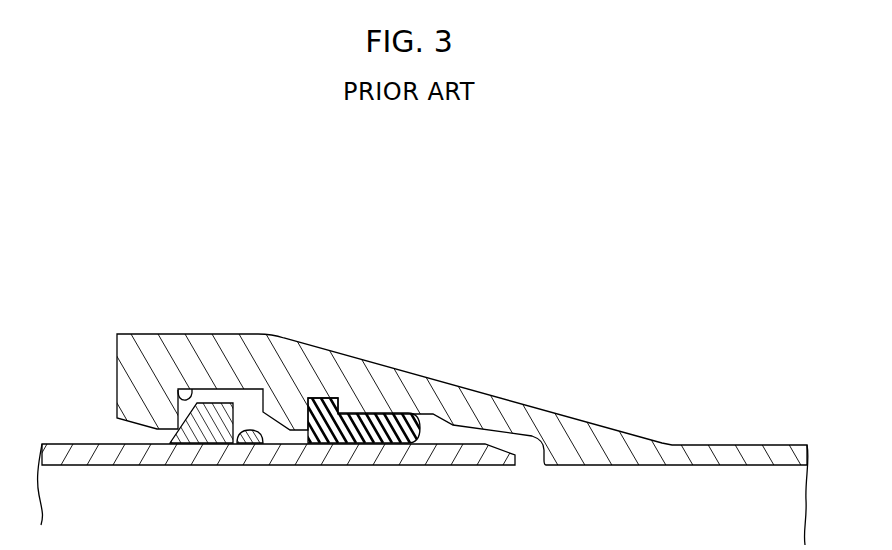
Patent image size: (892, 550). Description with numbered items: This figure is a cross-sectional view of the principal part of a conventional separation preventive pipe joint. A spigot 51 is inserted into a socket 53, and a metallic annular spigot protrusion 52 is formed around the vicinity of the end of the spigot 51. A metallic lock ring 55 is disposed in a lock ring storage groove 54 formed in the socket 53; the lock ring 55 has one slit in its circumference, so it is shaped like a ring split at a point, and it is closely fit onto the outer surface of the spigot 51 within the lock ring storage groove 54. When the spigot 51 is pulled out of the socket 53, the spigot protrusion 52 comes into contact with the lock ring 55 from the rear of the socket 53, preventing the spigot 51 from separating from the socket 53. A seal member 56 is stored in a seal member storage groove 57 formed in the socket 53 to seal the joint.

The spigot 51 is at (470, 450).
The spigot protrusion 52 is at (245, 430).
The socket 53 is at (153, 342).
The lock ring storage groove 54 is at (176, 398).
The lock ring 55 is at (213, 408).
The seal member 56 is at (355, 412).
The seal member storage groove 57 is at (433, 413).